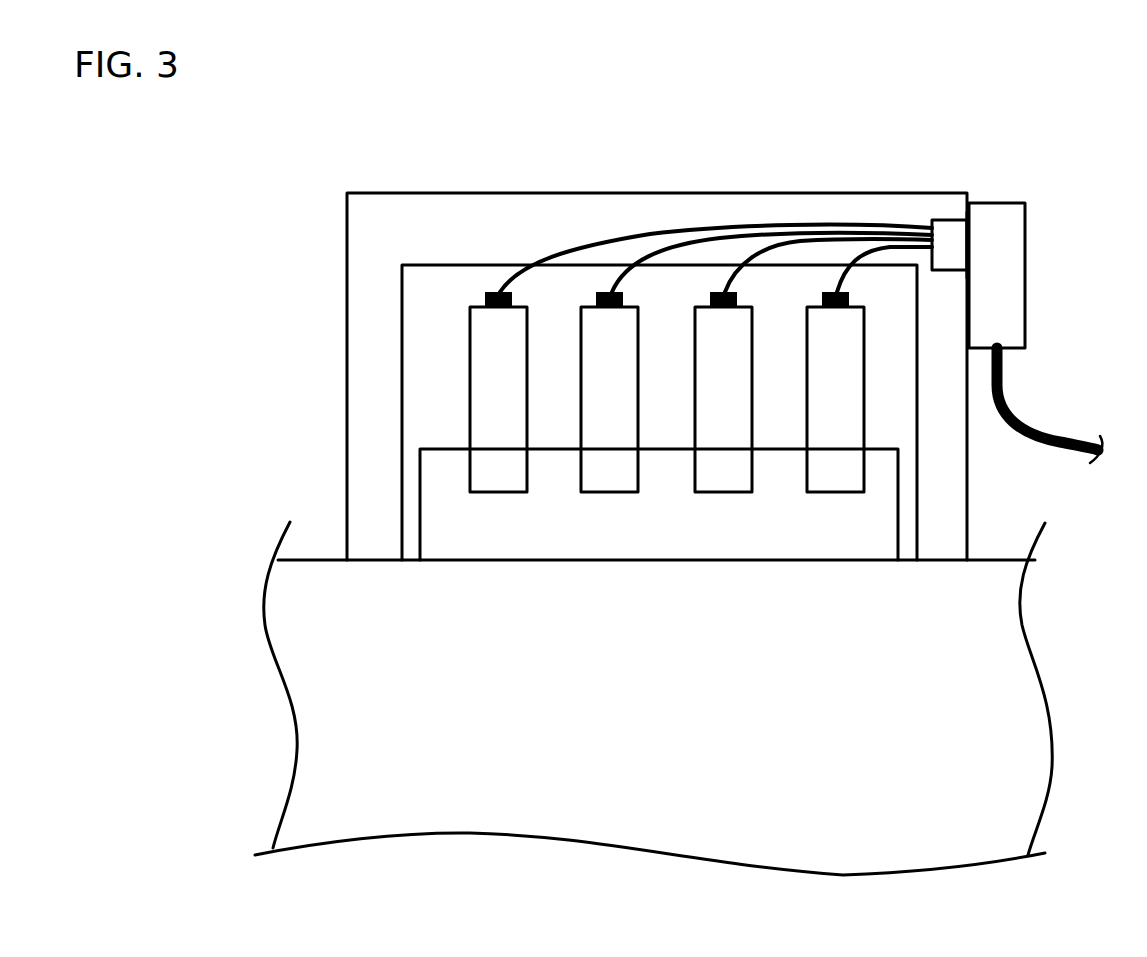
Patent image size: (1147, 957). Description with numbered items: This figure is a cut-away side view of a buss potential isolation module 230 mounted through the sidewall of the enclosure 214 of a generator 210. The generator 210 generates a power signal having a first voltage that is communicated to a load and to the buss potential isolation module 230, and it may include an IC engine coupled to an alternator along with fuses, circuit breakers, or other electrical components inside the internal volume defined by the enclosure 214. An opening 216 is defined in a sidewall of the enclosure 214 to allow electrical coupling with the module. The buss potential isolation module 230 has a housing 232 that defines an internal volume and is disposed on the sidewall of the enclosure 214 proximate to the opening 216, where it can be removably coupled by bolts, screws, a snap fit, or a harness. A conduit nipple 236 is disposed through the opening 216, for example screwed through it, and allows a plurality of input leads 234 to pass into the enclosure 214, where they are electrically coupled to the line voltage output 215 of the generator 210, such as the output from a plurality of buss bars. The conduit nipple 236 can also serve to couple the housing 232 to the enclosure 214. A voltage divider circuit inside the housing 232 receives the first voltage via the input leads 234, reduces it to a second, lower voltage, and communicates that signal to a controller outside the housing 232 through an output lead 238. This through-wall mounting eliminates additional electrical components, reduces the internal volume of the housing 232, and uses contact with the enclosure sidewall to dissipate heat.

The generator 210 is at (347, 343).
The enclosure 214 is at (347, 273).
The line voltage output 215 is at (485, 298).
The opening 216 is at (968, 227).
The buss potential isolation module 230 is at (1049, 333).
The housing 232 is at (1008, 312).
The input leads 234 is at (570, 248).
The conduit nipple 236 is at (950, 232).
The output lead 238 is at (1022, 415).